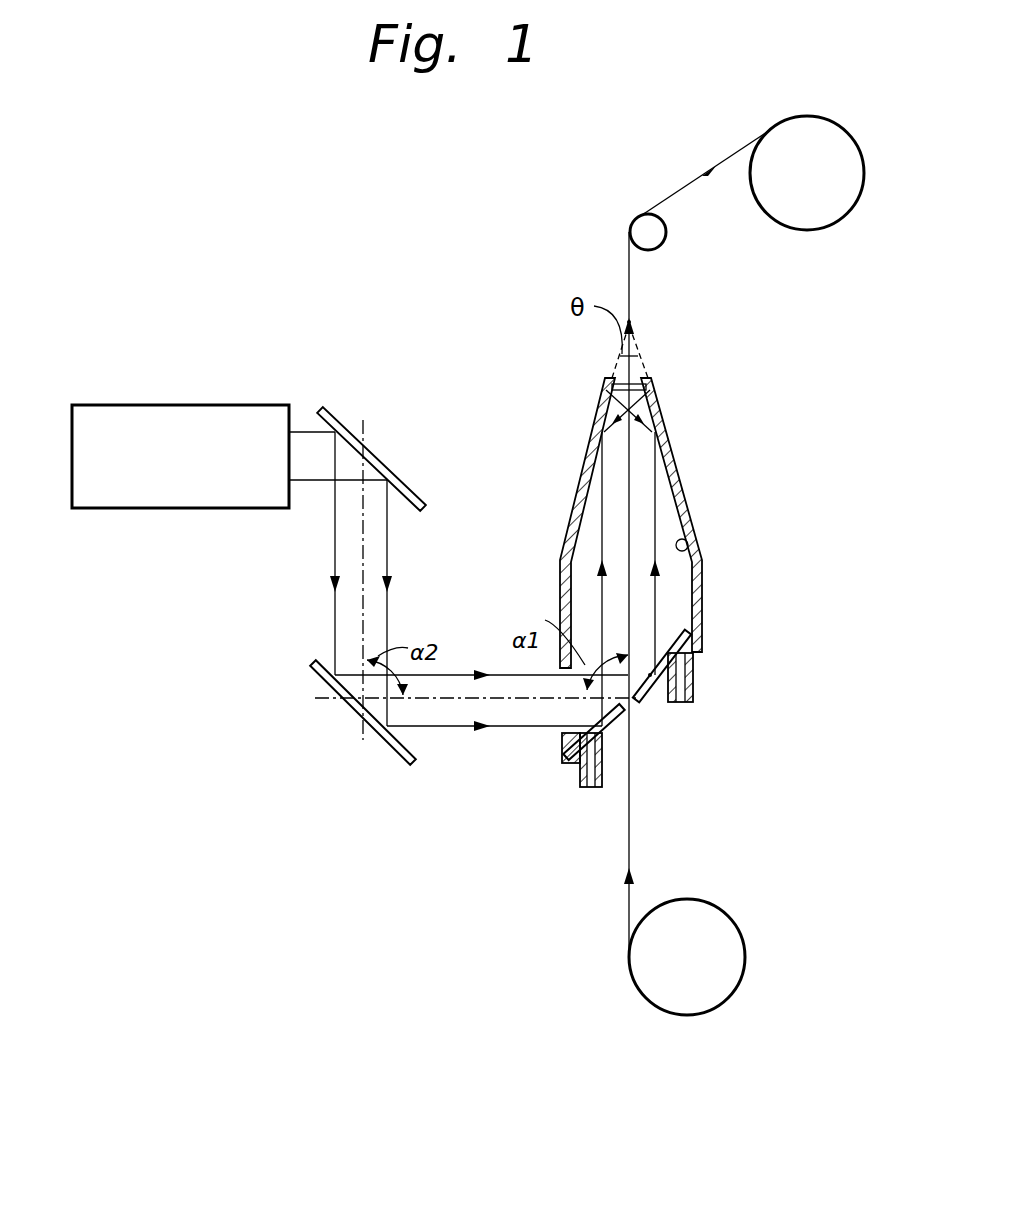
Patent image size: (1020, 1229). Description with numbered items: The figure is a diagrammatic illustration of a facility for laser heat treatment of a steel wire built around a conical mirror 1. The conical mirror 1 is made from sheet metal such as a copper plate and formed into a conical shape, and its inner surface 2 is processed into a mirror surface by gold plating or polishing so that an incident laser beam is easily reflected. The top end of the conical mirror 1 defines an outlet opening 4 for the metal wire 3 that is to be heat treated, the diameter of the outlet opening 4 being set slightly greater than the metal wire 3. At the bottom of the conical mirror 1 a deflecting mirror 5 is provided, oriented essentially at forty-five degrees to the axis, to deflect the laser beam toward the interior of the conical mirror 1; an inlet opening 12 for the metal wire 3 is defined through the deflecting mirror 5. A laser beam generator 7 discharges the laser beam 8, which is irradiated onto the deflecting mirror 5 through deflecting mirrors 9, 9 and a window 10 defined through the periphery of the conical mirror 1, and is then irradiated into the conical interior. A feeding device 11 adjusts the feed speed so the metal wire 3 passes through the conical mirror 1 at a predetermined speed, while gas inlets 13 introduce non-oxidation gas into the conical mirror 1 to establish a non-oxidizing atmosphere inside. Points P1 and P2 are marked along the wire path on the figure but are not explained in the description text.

The conical mirror 1 is at (690, 506).
The inner surface 2 is at (688, 548).
The metal wire 3 is at (676, 185).
The outlet opening 4 is at (642, 380).
The deflecting mirror 5 is at (656, 712).
The laser beam generator 7 is at (120, 404).
The laser beam 8 is at (318, 484).
The deflecting mirrors 9 is at (352, 425).
The window 10 is at (566, 730).
The feeding device 11 is at (828, 230).
The inlet opening 12 is at (634, 730).
The gas inlets 13 is at (694, 698).
The measuring point P1 is at (640, 675).
The measuring point P2 is at (632, 322).